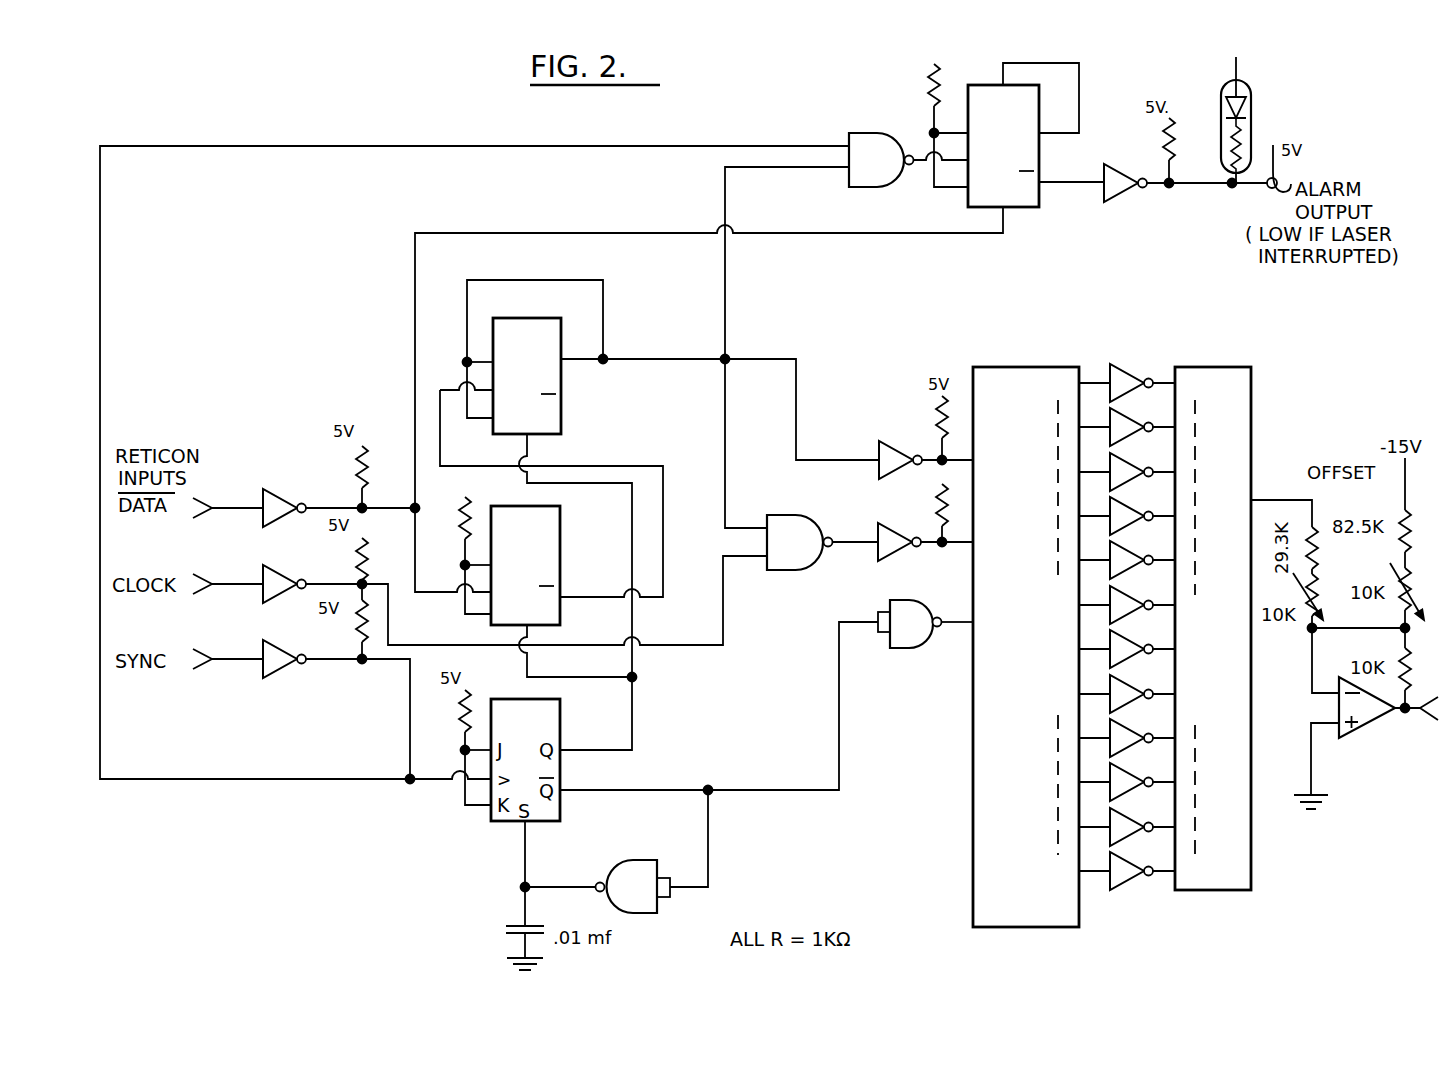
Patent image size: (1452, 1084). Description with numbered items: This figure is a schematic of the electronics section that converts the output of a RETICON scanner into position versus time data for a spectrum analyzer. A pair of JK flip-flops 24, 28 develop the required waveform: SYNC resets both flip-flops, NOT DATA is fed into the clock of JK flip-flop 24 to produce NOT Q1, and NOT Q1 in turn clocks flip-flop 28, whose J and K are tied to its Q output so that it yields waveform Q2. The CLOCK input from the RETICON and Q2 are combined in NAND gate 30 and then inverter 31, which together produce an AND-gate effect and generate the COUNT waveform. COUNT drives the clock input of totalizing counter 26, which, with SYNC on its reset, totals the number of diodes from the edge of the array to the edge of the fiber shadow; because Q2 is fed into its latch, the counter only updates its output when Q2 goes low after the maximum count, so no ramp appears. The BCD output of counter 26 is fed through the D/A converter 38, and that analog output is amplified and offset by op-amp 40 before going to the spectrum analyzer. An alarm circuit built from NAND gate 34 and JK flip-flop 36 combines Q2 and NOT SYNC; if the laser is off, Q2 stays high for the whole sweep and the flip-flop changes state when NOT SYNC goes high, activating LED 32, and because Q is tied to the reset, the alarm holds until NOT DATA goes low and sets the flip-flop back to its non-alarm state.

The JK flip-flop 24 is at (565, 547).
The totalizing counter 26 is at (970, 822).
The JK flip-flop 28 is at (523, 318).
The NAND gate 30 is at (795, 570).
The inverter 31 is at (880, 566).
The LED 32 is at (1221, 90).
The NAND gate 34 is at (866, 130).
The JK flip-flop 36 is at (1039, 207).
The D/A converter 38 is at (1215, 890).
The op-amp 40 is at (1357, 736).